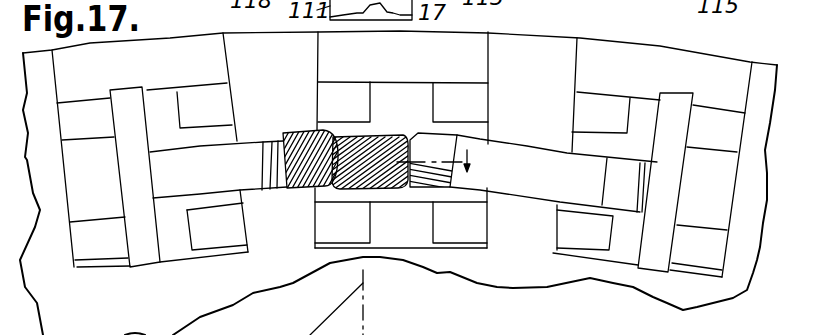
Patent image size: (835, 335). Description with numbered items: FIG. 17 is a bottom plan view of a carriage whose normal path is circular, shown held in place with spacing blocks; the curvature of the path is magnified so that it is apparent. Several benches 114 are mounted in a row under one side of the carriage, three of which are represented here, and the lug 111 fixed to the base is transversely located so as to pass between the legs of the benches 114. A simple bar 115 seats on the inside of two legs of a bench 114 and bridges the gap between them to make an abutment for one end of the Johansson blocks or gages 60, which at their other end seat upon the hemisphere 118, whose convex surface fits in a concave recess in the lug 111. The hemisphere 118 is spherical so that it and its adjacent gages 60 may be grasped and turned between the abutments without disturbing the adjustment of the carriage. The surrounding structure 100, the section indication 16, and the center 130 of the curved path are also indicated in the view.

The section line 16 is at (447, 157).
The Johansson Blocks or gages 60 is at (527, 152).
The housing 100 is at (398, 194).
The lug 111 is at (382, 138).
The bench 114 is at (423, 90).
The bar 115 is at (147, 262).
The hemisphere 118 is at (302, 132).
The point 130 is at (363, 283).